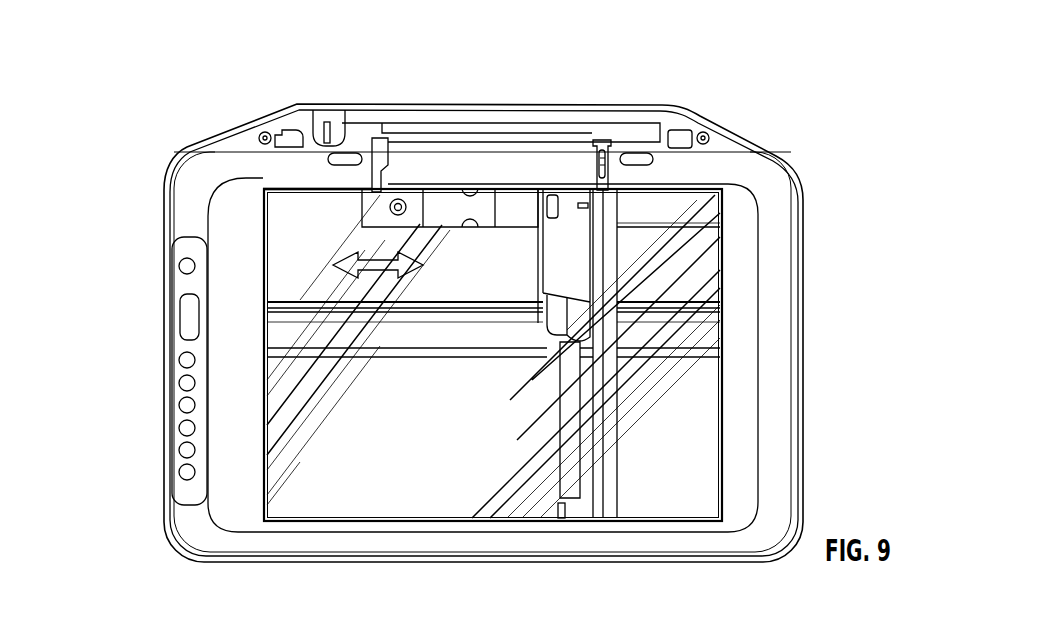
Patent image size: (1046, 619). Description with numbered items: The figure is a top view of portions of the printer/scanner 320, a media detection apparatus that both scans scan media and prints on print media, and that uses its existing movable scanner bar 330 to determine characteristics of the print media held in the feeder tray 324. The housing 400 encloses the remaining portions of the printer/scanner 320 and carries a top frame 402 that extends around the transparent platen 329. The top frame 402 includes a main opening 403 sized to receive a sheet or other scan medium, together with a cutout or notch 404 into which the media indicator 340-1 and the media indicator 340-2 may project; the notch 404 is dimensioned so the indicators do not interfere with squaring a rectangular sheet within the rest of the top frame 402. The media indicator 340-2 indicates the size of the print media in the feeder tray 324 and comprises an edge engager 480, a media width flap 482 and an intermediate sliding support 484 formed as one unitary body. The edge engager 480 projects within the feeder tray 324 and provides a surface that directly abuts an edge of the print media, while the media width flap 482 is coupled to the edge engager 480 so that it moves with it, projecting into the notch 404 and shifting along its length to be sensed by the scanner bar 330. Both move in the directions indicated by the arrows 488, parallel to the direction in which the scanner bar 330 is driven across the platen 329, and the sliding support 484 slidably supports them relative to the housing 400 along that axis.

The printer/scanner 320 is at (134, 135).
The feeder tray 324 is at (543, 110).
The transparent platen 329 is at (665, 501).
The movable scanner bar 330 is at (568, 462).
The media indicator 340-1 is at (618, 152).
The media indicator 340-2 is at (370, 96).
The housing 400 is at (808, 224).
The top frame 402 is at (747, 420).
The main opening 403 is at (432, 510).
The notch 404 is at (446, 194).
The edge engager 480 is at (331, 146).
The media width flap 482 is at (372, 181).
The intermediate sliding support 484 is at (343, 137).
The arrows 488 is at (378, 269).